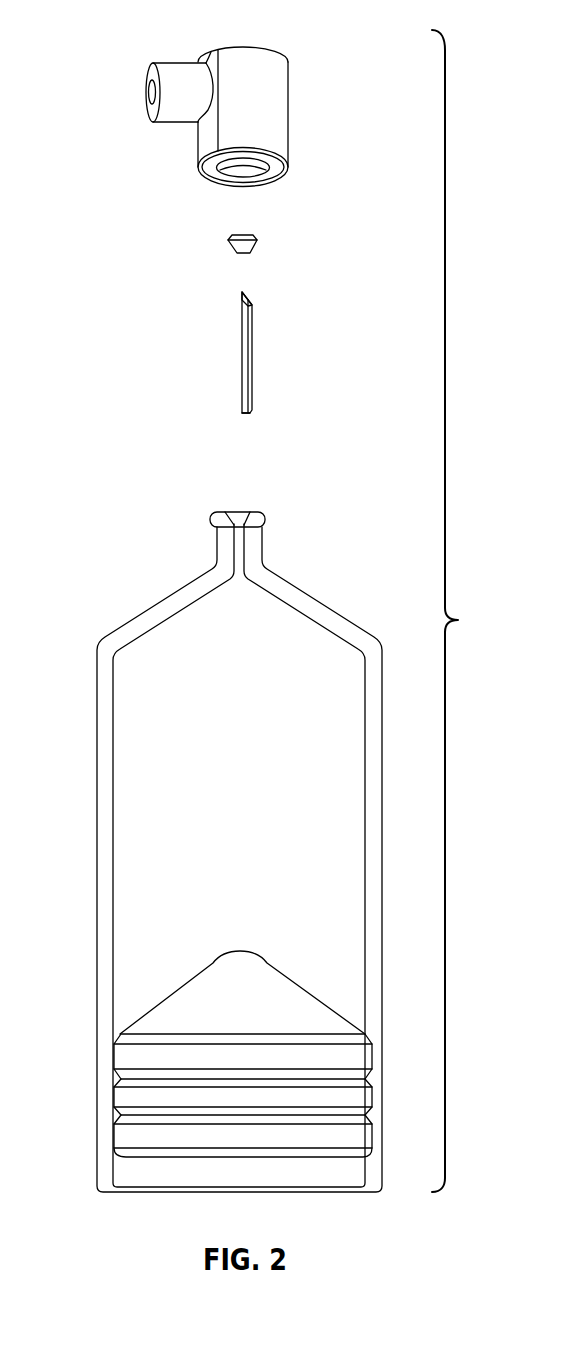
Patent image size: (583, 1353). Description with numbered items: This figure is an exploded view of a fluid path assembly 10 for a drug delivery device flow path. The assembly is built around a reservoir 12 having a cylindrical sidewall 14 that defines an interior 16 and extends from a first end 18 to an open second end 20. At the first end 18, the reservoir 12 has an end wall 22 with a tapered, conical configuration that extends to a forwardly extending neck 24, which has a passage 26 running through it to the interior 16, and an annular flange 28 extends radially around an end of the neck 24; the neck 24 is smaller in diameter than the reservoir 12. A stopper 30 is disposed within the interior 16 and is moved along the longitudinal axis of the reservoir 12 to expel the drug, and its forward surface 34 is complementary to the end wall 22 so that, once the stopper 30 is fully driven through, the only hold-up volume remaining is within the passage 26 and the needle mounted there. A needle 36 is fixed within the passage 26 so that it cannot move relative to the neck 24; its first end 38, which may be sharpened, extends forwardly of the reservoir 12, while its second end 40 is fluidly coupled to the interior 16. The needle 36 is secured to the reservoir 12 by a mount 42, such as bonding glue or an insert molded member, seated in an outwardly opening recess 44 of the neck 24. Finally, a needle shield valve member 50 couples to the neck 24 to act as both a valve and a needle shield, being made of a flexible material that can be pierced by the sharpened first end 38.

The fluid path assembly 10 is at (78, 70).
The reservoir 12 is at (208, 858).
The cylindrical sidewall 14 is at (99, 750).
The interior 16 is at (178, 880).
The first end 18 is at (105, 640).
The open second end 20 is at (229, 864).
The end wall 22 is at (175, 603).
The neck 24 is at (262, 549).
The passage 26 is at (233, 546).
The annular flange 28 is at (270, 519).
The stopper 30 is at (120, 1097).
The forward surface 34 is at (178, 990).
The needle 36 is at (252, 350).
The first end 38 is at (247, 296).
The second end 40 is at (244, 413).
The mount 42 is at (257, 242).
The outwardly opening recess 44 is at (253, 512).
The needle shield valve member 50 is at (197, 62).